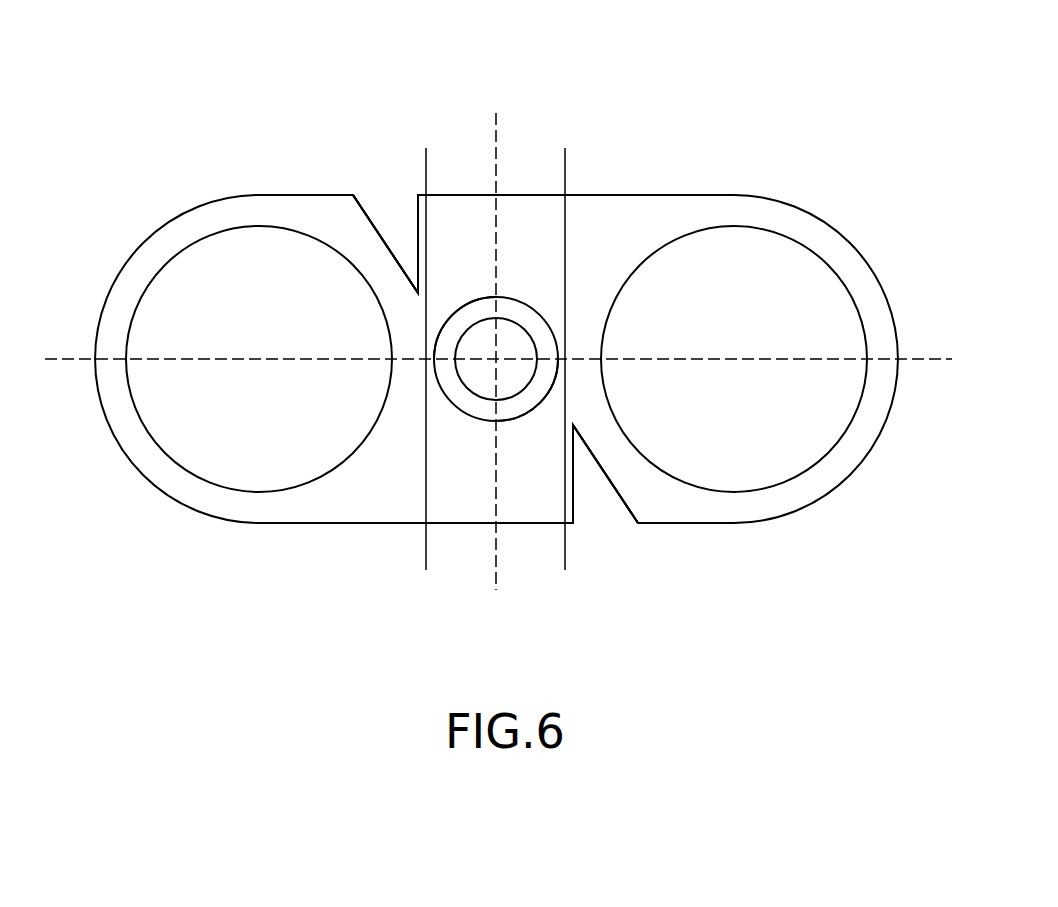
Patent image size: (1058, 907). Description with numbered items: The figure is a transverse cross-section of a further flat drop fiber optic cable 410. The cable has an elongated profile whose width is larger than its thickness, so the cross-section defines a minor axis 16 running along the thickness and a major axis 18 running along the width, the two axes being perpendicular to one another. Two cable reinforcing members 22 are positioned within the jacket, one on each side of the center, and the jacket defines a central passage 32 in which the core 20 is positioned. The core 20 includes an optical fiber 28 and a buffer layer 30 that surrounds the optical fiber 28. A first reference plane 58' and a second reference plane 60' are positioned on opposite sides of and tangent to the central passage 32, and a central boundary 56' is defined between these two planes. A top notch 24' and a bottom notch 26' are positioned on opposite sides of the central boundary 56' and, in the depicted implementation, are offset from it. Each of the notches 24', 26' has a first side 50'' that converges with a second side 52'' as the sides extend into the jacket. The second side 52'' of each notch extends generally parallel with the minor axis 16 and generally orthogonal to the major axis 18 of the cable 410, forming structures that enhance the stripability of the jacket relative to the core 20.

The fiber optic cable 410 is at (764, 190).
The cable reinforcing members 22 is at (247, 332).
The major axis 18 is at (928, 358).
The minor axis 16 is at (495, 570).
The first reference plane 58' is at (448, 313).
The second reference plane 60' is at (604, 358).
The central boundary 56' is at (495, 298).
The core 20 is at (527, 305).
The optical fiber 28 is at (482, 377).
The buffer layer 30 is at (520, 403).
The central passage 32 is at (452, 320).
The top notch 24' is at (371, 175).
The bottom notch 26' is at (629, 530).
The first side 50'' is at (501, 358).
The second side 52'' is at (495, 370).